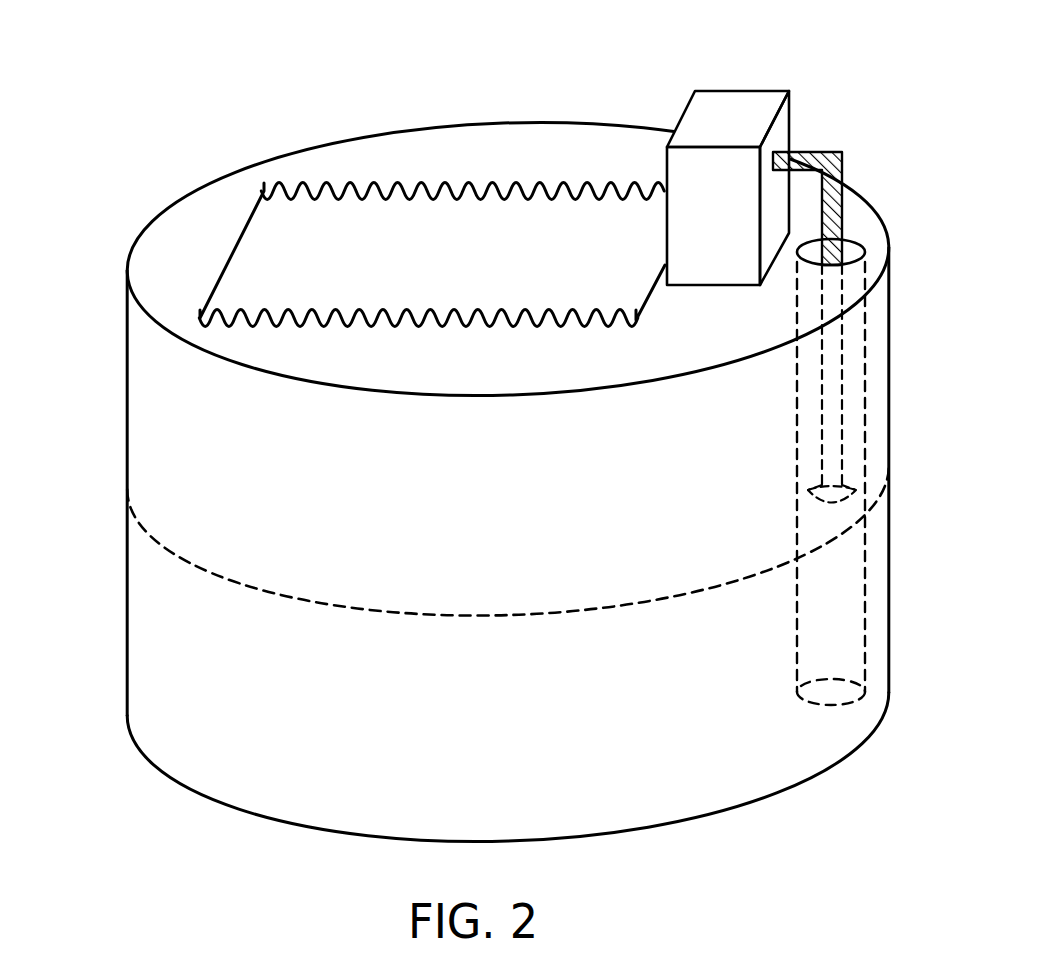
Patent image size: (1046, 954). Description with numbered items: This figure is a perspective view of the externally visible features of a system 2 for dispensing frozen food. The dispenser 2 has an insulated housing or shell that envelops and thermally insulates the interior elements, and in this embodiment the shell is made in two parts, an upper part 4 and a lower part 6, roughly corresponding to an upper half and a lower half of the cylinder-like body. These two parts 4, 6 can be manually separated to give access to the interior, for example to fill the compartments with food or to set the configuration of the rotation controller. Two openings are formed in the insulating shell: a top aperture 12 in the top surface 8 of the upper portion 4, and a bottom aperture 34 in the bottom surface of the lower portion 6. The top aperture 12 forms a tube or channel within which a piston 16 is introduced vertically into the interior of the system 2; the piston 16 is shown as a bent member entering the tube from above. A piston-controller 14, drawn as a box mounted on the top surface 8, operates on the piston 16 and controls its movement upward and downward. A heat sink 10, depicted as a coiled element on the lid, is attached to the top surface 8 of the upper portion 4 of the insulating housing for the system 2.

The system for dispensing frozen food 2 is at (92, 455).
The upper part of insulated shell 4 is at (150, 420).
The lower part of insulated shell 6 is at (150, 653).
The top surface 8 is at (168, 237).
The heat sink 10 is at (322, 230).
The top aperture 12 is at (852, 247).
The piston-controller 14 is at (732, 107).
The piston 16 is at (835, 152).
The bottom aperture 34 is at (836, 694).